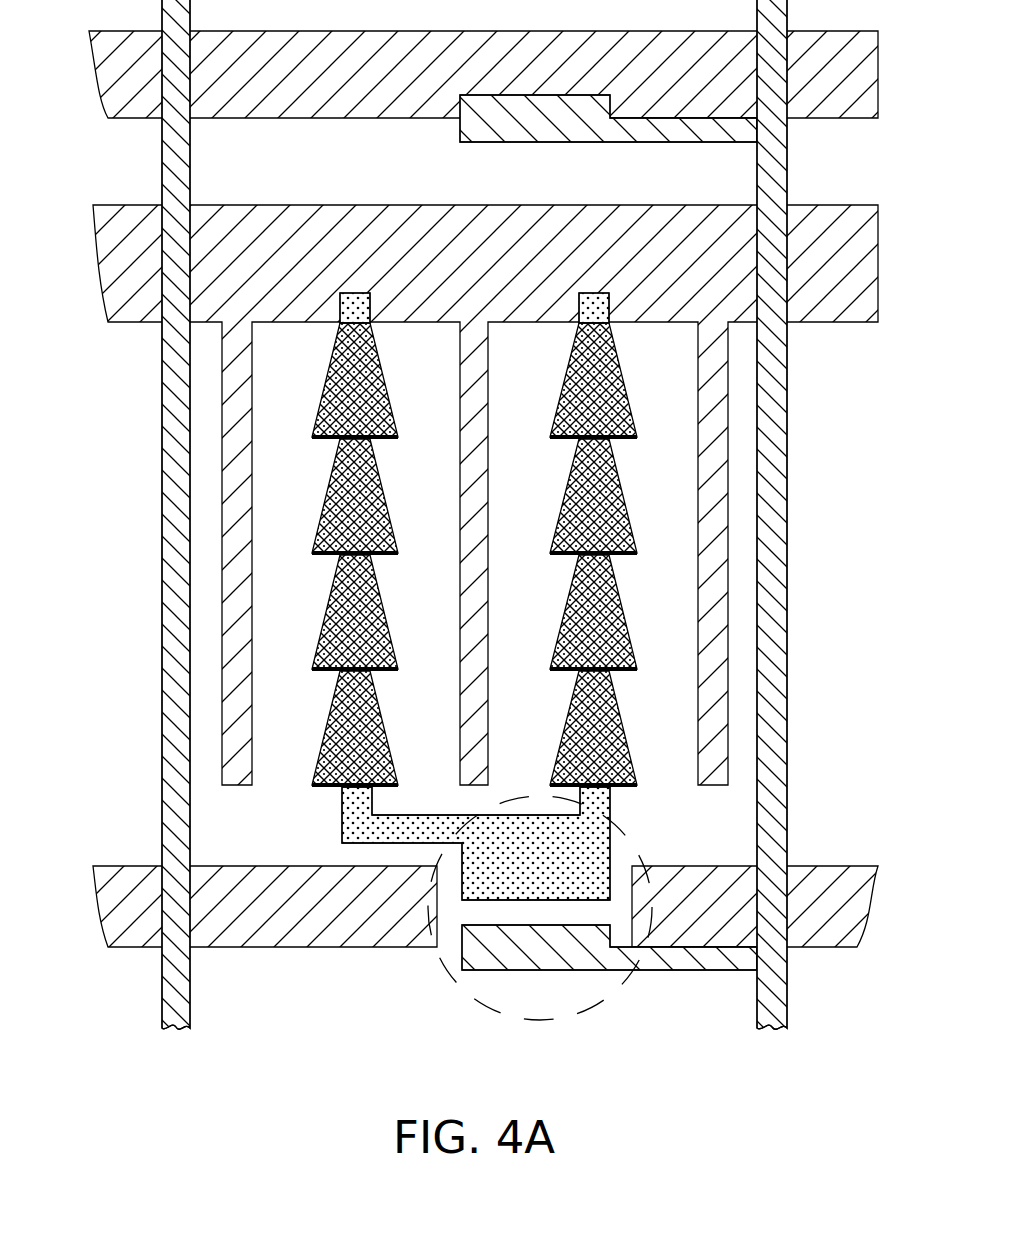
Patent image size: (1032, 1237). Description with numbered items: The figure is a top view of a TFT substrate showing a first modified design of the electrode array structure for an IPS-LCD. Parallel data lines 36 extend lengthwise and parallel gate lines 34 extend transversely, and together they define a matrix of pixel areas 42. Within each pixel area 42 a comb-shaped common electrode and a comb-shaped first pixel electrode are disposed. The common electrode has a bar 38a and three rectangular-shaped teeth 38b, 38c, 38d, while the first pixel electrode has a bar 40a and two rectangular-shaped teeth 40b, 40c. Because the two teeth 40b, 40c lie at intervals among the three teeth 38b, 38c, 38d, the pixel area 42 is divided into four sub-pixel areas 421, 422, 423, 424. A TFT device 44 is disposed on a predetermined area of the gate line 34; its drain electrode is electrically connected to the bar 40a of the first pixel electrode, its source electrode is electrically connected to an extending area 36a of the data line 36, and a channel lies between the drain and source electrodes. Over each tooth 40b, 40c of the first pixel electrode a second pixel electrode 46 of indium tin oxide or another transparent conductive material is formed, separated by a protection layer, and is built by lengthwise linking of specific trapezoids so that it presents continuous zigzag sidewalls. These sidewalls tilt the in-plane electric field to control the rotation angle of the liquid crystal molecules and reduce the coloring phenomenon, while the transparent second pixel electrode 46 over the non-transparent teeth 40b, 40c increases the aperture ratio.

The gate line 34 is at (247, 947).
The data line 36 is at (163, 501).
The extending area of the data line 36a is at (577, 950).
The bar of the comb-shaped common electrode 38a is at (806, 212).
The rectangular-shaped tooth of the common electrode 38b is at (252, 513).
The rectangular-shaped tooth of the common electrode 38c is at (488, 513).
The rectangular-shaped tooth of the common electrode 38d is at (705, 513).
The bar of the comb-shaped first pixel electrode 40a is at (560, 862).
The rectangular-shaped tooth of the first pixel electrode 40b is at (496, 554).
The rectangular-shaped tooth of the first pixel electrode 40c is at (616, 701).
The pixel area 42 is at (753, 438).
The sub-pixel area 421 is at (316, 368).
The sub-pixel area 422 is at (449, 368).
The sub-pixel area 423 is at (554, 368).
The sub-pixel area 424 is at (685, 368).
The TFT device 44 is at (452, 1002).
The second pixel electrode 46 is at (395, 646).